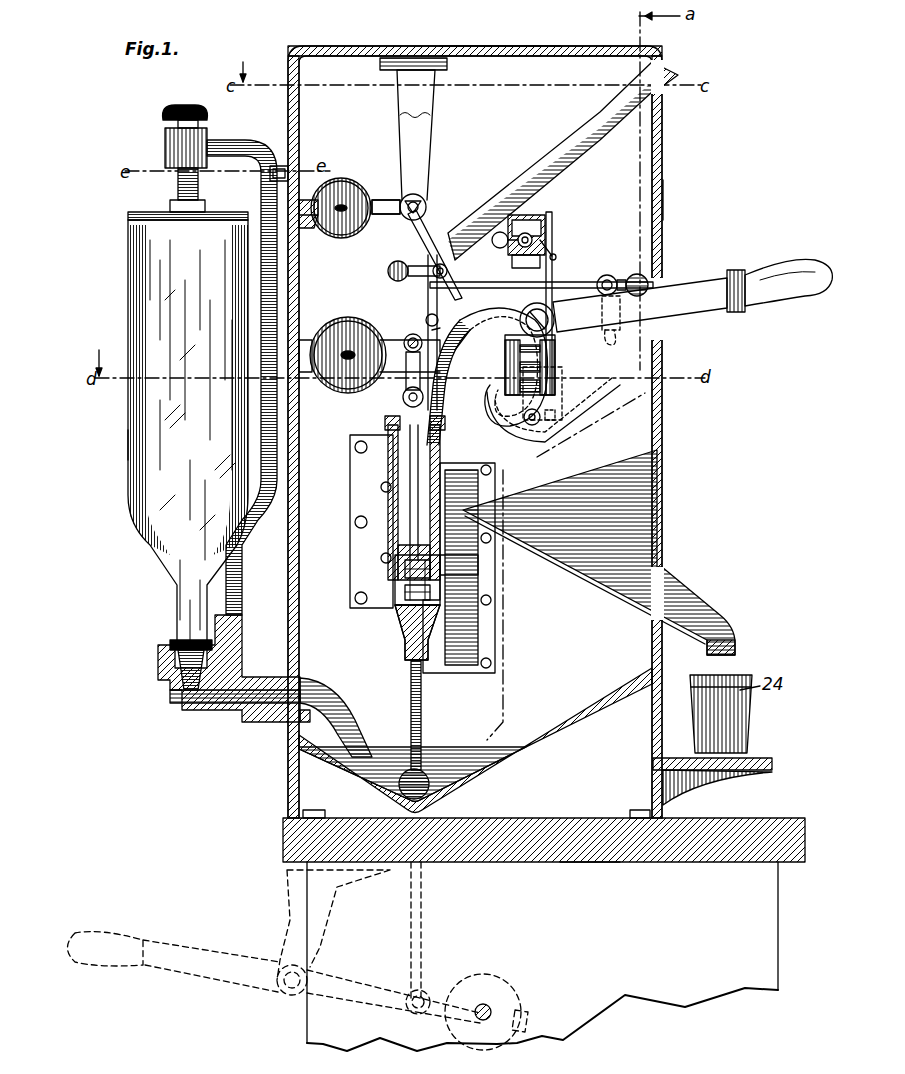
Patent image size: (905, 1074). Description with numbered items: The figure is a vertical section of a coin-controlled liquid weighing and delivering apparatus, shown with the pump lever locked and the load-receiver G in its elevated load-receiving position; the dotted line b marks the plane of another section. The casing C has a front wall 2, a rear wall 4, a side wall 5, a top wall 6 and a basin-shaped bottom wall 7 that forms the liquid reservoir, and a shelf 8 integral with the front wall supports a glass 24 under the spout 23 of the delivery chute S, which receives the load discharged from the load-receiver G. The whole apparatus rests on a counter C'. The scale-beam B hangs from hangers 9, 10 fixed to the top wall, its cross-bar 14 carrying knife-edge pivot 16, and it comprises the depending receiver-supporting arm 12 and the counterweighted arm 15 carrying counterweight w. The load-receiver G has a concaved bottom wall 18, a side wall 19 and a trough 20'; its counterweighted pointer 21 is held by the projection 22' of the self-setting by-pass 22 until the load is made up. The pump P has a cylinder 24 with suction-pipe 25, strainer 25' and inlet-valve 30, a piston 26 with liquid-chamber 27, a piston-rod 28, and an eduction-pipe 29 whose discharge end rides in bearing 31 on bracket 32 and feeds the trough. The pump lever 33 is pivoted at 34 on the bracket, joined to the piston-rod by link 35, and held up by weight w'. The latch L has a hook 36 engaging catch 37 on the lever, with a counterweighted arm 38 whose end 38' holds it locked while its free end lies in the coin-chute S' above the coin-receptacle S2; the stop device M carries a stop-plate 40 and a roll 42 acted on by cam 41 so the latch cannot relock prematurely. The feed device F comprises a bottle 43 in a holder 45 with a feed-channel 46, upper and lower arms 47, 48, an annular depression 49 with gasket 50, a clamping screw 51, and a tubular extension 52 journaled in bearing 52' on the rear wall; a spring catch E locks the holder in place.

The front wall 2 is at (660, 424).
The rear wall 4 is at (288, 538).
The side wall 5 is at (597, 630).
The top wall 6 is at (505, 52).
The basin-shaped wall 7 is at (578, 732).
The bracket or shelf 8 is at (755, 765).
The hanger 9 is at (425, 128).
The hanger 10 is at (398, 102).
The receiver-supporting arm 12 is at (482, 400).
The cross-bar 14 is at (422, 196).
The counterweighted arm 15 is at (378, 198).
The knife-edge pivot 16 is at (425, 200).
The concaved bottom wall 18 is at (548, 442).
The side wall 19 is at (595, 392).
The flange or trough 20' is at (570, 389).
The arm or pointer 21 is at (552, 282).
The by-pass 22 is at (525, 229).
The projection 22' is at (564, 243).
The spout 23 is at (695, 605).
The cylinder 24 is at (395, 498).
The suction-pipe 25 is at (433, 830).
The strainer 25' is at (432, 761).
The piston 26 is at (395, 568).
The liquid-chamber 27 is at (450, 562).
The piston-rod 28 is at (410, 450).
The eduction-pipe 29 is at (448, 420).
The inlet-valve 30 is at (402, 630).
The bearing 31 is at (500, 365).
The bracket 32 is at (540, 362).
The pump actuator or lever 33 is at (680, 296).
The pivot 34 is at (530, 310).
The link 35 is at (404, 392).
The locking arm or hook 36 is at (615, 332).
The catch 37 is at (600, 312).
The counterweighted arm 38 is at (541, 268).
The counterweighted end 38' is at (631, 262).
The stop-plate 40 is at (425, 328).
The cam 41 is at (410, 360).
The roll 42 is at (430, 322).
The vessel or primary feeder 43 is at (160, 530).
The vessel-holder 45 is at (242, 548).
The feed-channel 46 is at (225, 710).
The upper arm 47 is at (238, 138).
The lower arm 48 is at (185, 710).
The annular depression 49 is at (178, 645).
The flexible gasket 50 is at (168, 660).
The clamping device 51 is at (180, 182).
The tubular extension 52 is at (264, 657).
The bearing 52' is at (305, 721).
The scale-beam B is at (386, 200).
The casing C is at (661, 200).
The counter C' is at (590, 879).
The spring-actuated catch E is at (282, 166).
The primary feed device F is at (118, 445).
The load-receiver G is at (552, 393).
The latch L is at (607, 277).
The stop device M is at (398, 270).
The pump P is at (405, 632).
The delivery chute S is at (599, 552).
The coin-chute S' is at (563, 161).
The coin-receptacle S2 is at (490, 620).
The counterweight w is at (341, 193).
The weight w' is at (348, 344).
The section line b b is at (544, 463).